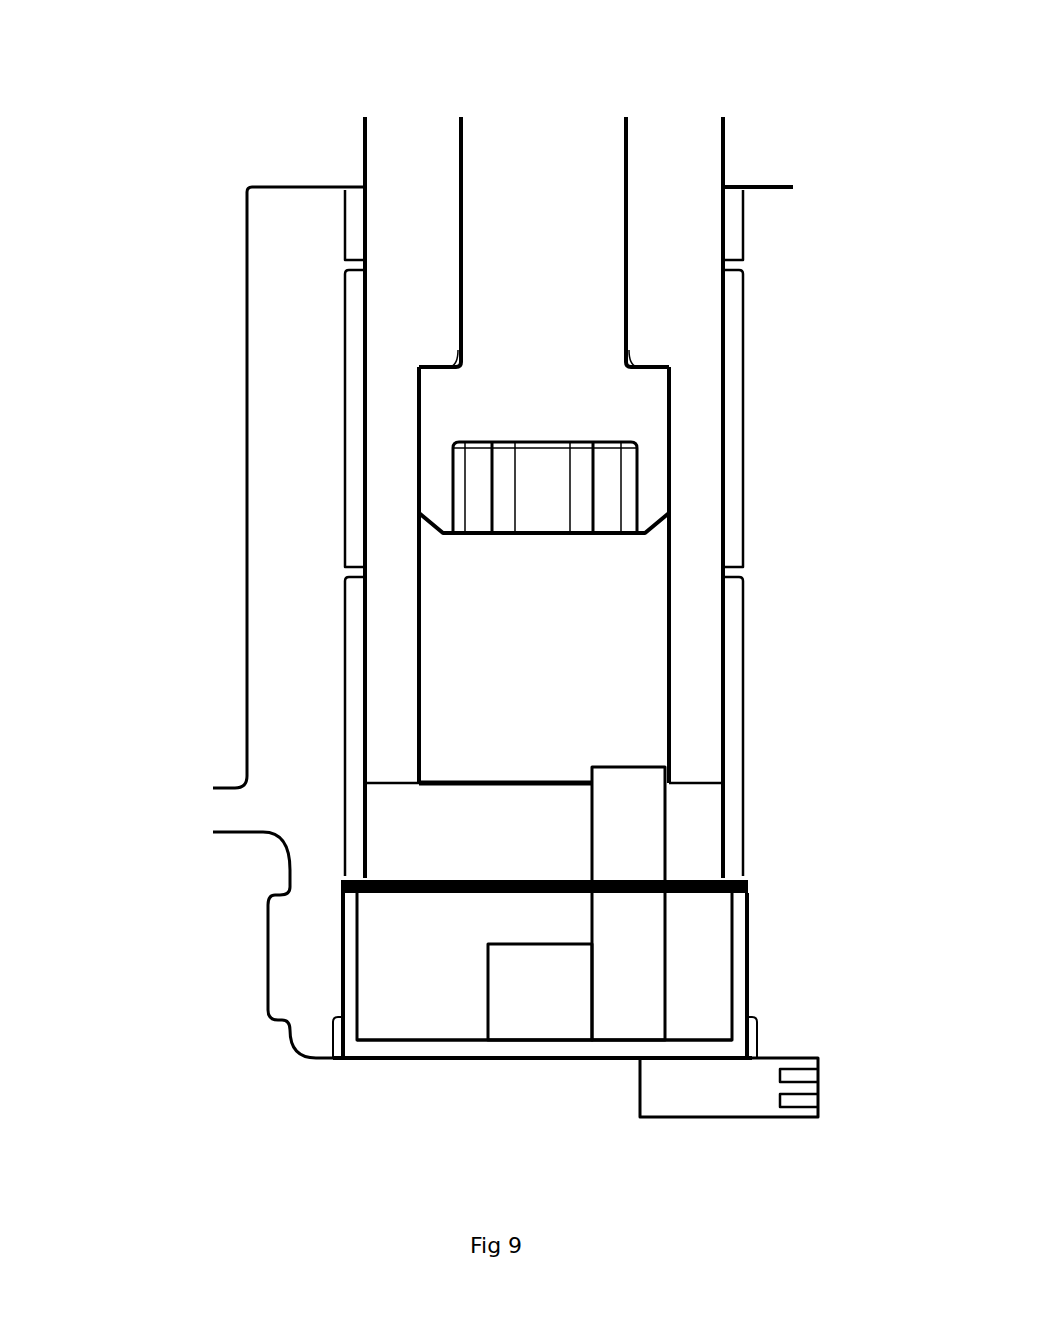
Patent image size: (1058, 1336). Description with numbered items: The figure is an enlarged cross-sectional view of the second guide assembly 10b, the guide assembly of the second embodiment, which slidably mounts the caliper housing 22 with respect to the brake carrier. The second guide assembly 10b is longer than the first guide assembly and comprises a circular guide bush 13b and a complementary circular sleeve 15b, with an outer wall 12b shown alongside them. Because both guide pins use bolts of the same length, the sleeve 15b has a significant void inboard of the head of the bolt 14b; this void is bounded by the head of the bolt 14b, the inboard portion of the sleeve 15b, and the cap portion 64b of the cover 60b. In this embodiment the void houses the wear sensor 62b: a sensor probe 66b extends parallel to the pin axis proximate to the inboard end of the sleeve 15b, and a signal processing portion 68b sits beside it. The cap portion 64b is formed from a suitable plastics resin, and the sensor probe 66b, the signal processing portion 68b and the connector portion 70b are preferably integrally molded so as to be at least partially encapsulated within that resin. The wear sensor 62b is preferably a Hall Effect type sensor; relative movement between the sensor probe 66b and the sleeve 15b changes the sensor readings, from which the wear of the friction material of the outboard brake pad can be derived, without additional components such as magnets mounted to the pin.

The second guide assembly 10b is at (312, 1118).
The outer housing wall 12b is at (742, 677).
The guide bush 13b is at (730, 368).
The bolt 14b is at (583, 208).
The sleeve 15b is at (692, 497).
The housing 22 is at (272, 578).
The cover 60b is at (424, 1074).
The wear sensor 62b is at (777, 972).
The cap portion 64b is at (563, 1058).
The sensor probe 66b is at (637, 836).
The signal processing portion 68b is at (530, 1018).
The connector portion 70b is at (717, 1095).